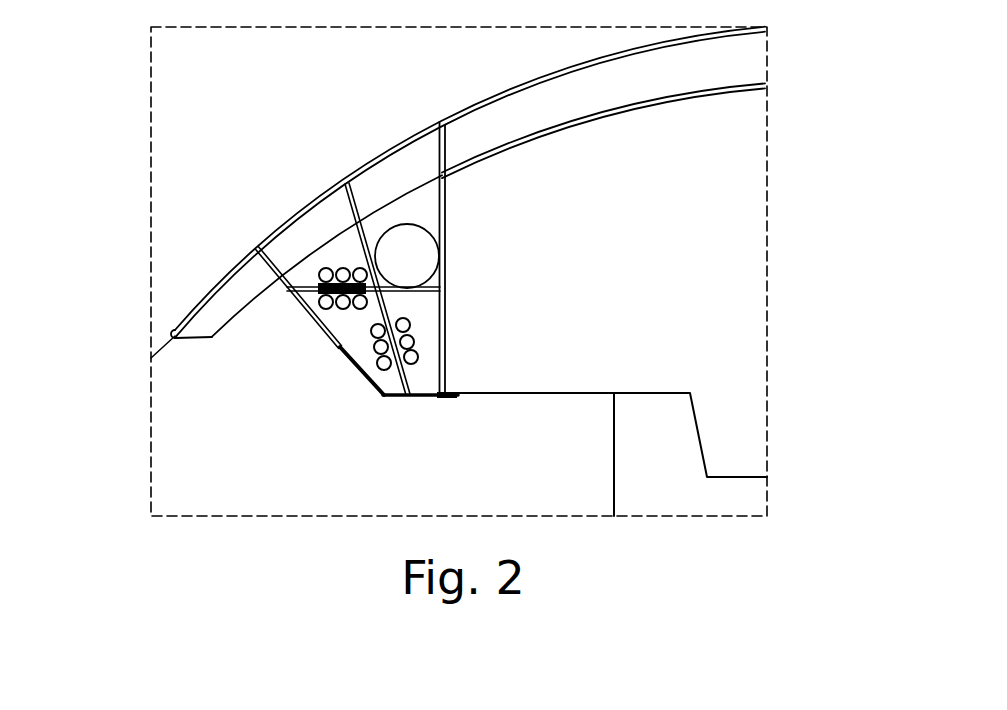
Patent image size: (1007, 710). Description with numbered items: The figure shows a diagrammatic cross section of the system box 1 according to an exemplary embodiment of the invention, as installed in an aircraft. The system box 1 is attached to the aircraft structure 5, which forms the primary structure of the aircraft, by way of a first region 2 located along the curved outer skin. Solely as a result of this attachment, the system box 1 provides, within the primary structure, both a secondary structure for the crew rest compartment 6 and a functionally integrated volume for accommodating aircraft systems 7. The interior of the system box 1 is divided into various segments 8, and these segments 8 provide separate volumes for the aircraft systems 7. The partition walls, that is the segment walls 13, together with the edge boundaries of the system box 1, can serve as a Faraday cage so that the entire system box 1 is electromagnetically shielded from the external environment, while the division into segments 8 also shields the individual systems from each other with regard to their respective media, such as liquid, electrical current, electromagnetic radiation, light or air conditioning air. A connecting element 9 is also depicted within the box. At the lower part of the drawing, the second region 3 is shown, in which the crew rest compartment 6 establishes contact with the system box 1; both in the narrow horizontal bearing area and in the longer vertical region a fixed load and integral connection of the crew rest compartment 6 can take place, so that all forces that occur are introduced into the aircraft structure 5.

The system box 1 is at (330, 395).
The first region 2 is at (320, 225).
The second region 3 is at (448, 400).
The aircraft structure 5 is at (203, 291).
The crew rest compartment 6 is at (541, 396).
The aircraft system 7 is at (317, 265).
The segments 8 is at (297, 276).
The connecting element 9 is at (379, 222).
The segment wall 13 is at (345, 206).